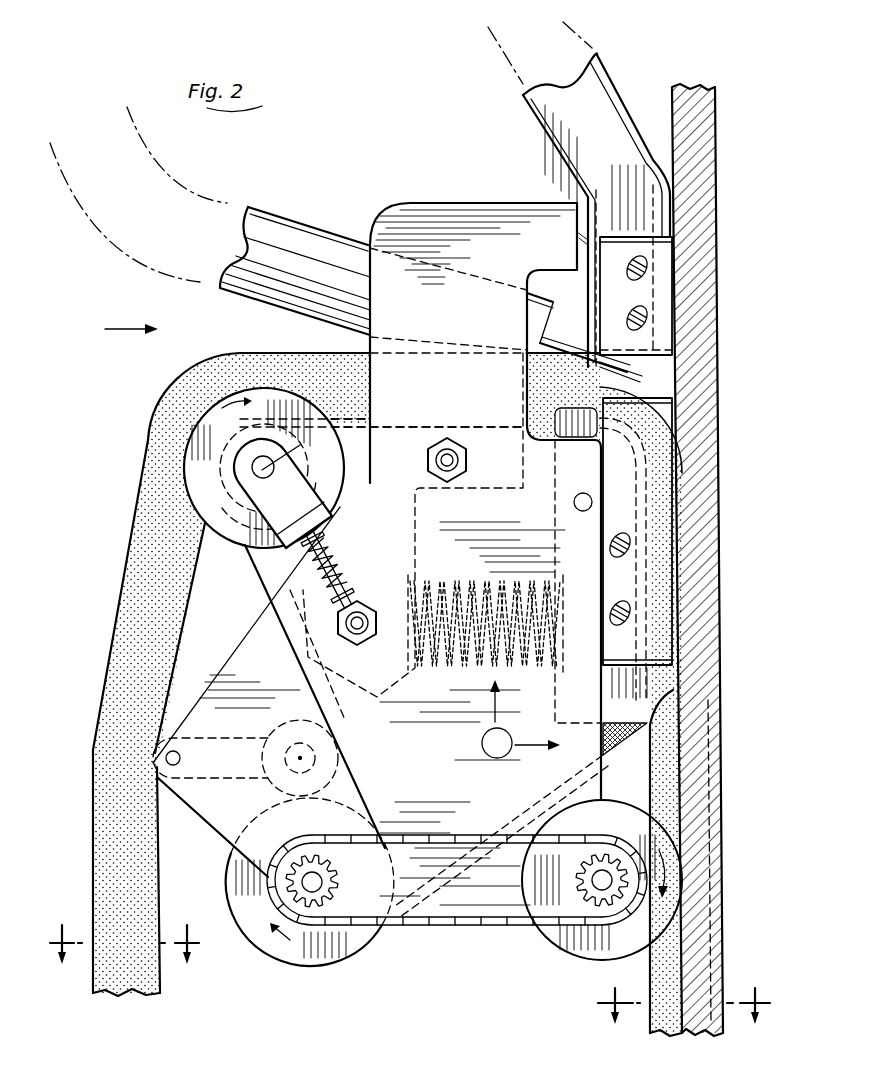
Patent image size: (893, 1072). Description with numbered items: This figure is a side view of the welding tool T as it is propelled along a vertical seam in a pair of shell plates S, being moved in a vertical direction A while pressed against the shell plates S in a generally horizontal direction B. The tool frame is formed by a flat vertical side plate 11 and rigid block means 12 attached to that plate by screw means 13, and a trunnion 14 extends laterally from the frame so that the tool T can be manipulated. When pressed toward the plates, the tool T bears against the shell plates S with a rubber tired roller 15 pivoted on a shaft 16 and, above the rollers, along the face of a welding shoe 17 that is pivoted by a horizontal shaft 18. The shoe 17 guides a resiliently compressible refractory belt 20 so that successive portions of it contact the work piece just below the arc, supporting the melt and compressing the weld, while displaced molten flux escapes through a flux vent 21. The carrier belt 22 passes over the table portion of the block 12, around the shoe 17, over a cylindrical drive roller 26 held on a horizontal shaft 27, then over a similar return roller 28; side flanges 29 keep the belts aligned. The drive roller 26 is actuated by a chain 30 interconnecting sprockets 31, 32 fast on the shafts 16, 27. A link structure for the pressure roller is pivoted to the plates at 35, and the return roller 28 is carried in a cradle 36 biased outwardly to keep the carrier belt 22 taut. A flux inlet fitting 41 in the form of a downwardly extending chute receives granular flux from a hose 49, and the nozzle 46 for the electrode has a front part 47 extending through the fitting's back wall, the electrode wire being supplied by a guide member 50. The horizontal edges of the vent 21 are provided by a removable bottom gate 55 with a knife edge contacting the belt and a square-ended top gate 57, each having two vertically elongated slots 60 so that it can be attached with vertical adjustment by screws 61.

The side plate 11 is at (243, 640).
The rigid block means 12 is at (417, 548).
The screw means 13 is at (463, 460).
The trunnions 14 is at (490, 757).
The rubber tired rollers 15 is at (583, 953).
The shaft 16 is at (606, 872).
The welding shoe 17 is at (668, 688).
The horizontal shaft 18 is at (573, 505).
The refractory belt 20 is at (92, 829).
The flux vent 21 is at (667, 374).
The carrier belt 22 is at (623, 753).
The drive roller 26 is at (293, 963).
The horizontal shaft 27 is at (302, 885).
The return roller 28 is at (205, 425).
The side flanges 29 is at (187, 437).
The chain 30 is at (443, 923).
The sprocket 31 is at (562, 887).
The sprocket 32 is at (340, 881).
The pivot 35 is at (166, 760).
The cradle 36 is at (262, 522).
The flux inlet fitting 41 is at (556, 148).
The nozzle 46 is at (328, 235).
The front part 47 is at (570, 347).
The hose 49 is at (507, 68).
The guide member 50 is at (100, 235).
The bottom gate 55 is at (627, 692).
The top gate 57 is at (640, 238).
The slots 60 is at (620, 533).
The screws 61 is at (628, 546).
The shell plates S is at (718, 158).
The welding tool T is at (117, 326).
The vertical direction A is at (484, 698).
The horizontal direction B is at (538, 755).